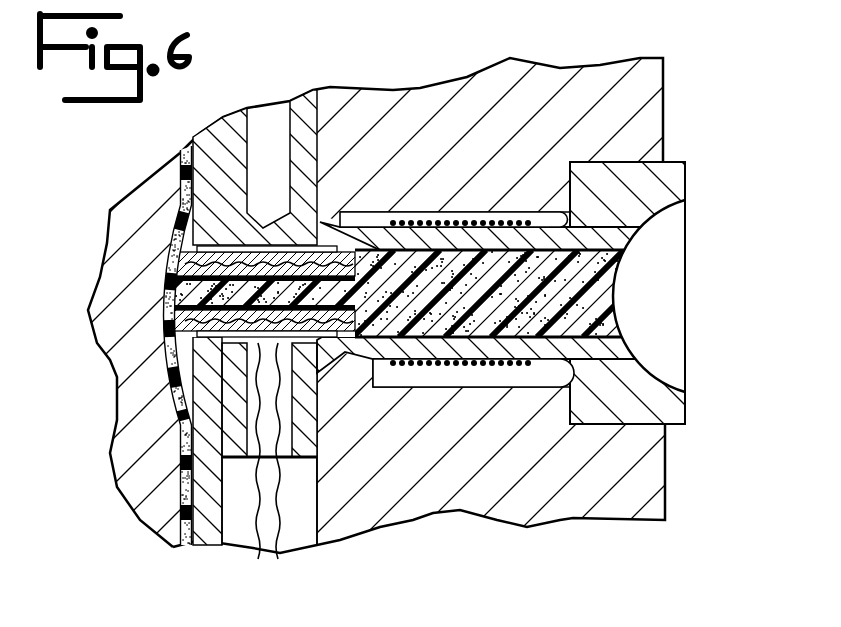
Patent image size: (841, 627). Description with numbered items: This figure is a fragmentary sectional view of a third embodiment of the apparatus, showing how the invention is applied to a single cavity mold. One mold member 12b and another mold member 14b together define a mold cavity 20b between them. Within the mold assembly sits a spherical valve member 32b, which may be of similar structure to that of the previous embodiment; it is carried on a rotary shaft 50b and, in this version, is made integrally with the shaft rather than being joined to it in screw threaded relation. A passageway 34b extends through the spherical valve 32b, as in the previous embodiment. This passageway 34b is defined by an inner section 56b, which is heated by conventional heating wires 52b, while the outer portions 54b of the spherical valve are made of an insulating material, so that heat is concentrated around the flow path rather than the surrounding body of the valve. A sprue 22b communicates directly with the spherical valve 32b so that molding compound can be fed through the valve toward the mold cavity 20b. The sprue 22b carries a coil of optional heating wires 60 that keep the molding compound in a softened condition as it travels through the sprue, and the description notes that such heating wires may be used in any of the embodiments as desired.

The mold member 12b is at (133, 203).
The mold member 14b is at (438, 149).
The mold cavity 20b is at (195, 158).
The sprue 22b is at (662, 408).
The spherical valve member 32b is at (322, 342).
The passageway 34b is at (167, 297).
The rotary shaft 50b is at (313, 127).
The heating wires 52b is at (317, 547).
The outer portions 54b is at (218, 352).
The inner section 56b is at (173, 267).
The heating wires 60 is at (462, 215).